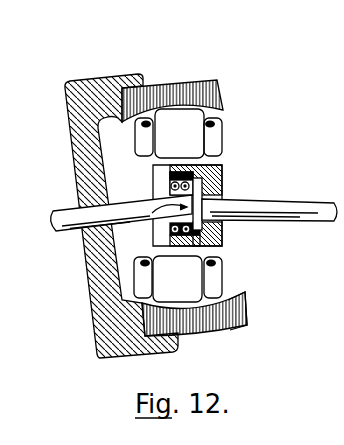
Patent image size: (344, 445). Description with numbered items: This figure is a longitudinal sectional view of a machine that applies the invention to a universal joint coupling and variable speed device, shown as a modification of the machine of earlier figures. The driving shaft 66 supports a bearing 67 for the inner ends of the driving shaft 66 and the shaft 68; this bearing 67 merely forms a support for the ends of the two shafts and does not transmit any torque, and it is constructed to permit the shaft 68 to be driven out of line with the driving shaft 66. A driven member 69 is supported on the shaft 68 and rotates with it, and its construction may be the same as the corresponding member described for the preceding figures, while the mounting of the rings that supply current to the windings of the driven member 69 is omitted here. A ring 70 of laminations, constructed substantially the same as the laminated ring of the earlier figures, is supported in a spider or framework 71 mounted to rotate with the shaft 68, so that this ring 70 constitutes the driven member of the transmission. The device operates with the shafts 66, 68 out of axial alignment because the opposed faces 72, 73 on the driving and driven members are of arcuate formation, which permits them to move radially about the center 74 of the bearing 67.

The driving shaft 66 is at (277, 207).
The bearing 67 is at (164, 176).
The shaft 68 is at (58, 211).
The driven member 69 is at (190, 134).
The ring of laminations 70 is at (178, 84).
The spider or framework 71 is at (65, 85).
The opposed face 72 is at (192, 308).
The opposed face 73 is at (230, 294).
The center of the bearing 74 is at (152, 213).